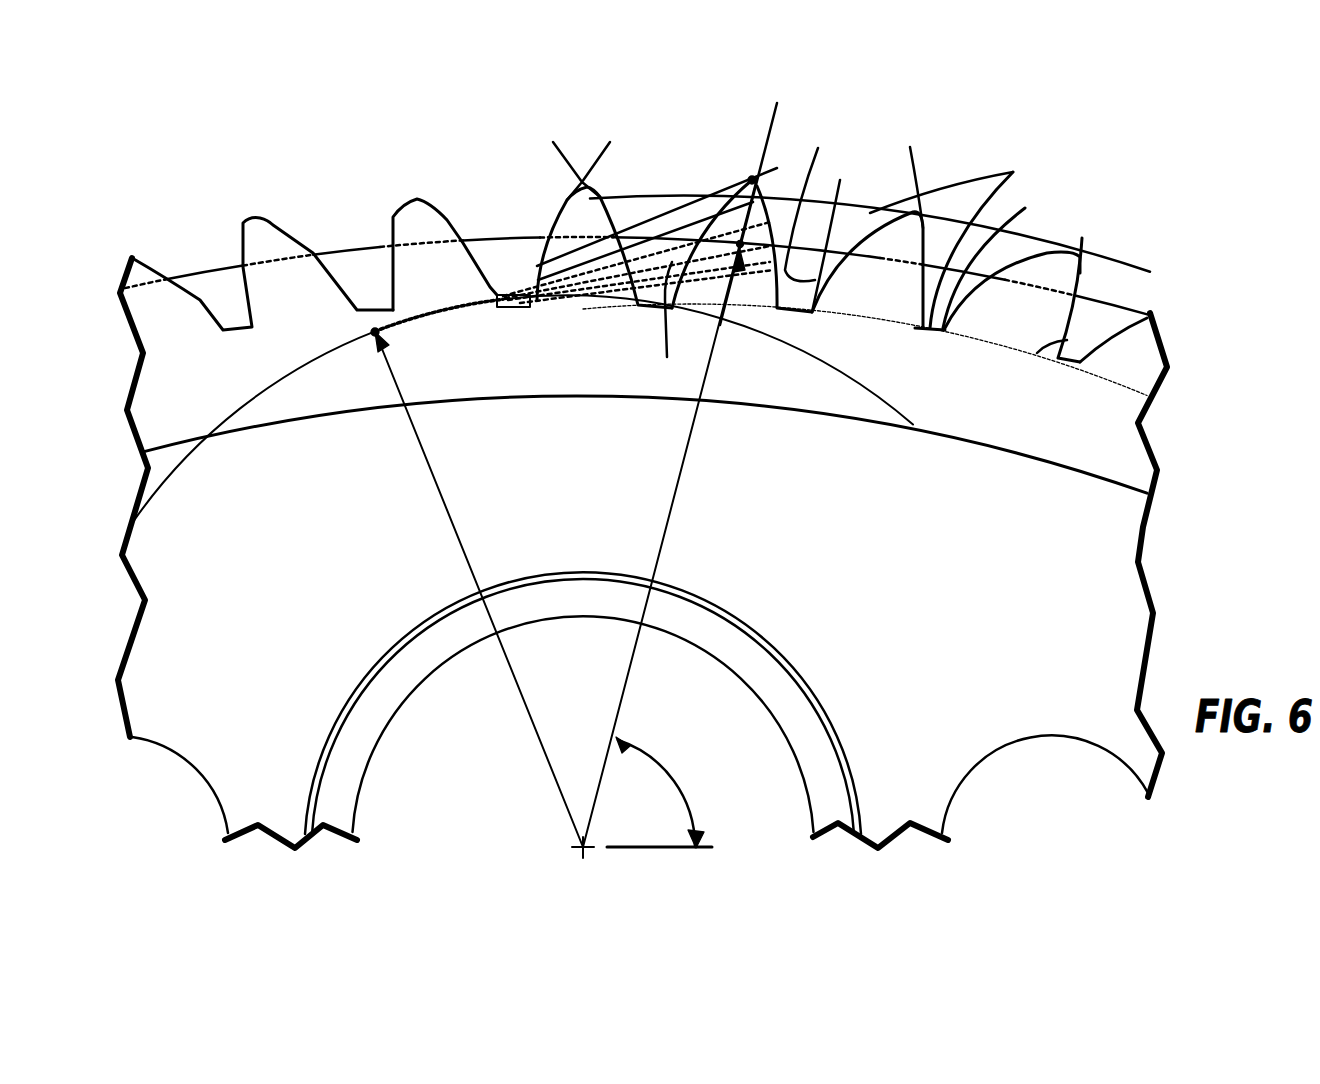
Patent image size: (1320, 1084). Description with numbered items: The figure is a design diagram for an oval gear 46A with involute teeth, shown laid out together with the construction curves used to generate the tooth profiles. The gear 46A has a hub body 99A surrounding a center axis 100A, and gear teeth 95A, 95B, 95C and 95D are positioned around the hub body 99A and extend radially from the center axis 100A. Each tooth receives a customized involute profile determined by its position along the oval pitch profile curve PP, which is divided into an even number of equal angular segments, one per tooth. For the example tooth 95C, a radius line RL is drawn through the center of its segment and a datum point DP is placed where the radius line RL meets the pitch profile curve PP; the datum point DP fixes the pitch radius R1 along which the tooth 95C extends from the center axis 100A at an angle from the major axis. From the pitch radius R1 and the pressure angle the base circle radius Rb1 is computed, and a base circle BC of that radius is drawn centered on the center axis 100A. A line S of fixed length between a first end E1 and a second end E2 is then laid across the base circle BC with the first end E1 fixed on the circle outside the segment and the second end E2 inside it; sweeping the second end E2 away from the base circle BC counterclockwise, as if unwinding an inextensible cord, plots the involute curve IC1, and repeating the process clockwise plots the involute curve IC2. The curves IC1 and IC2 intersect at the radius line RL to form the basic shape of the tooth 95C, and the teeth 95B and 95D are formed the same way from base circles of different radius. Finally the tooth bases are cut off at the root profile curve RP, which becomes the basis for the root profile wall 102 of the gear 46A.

The gear tooth 95A is at (417, 200).
The gear tooth 95B is at (573, 203).
The gear tooth 95C is at (675, 293).
The gear tooth 95D is at (903, 313).
The root profile wall 102 is at (1038, 267).
The hub body 99A is at (1127, 443).
The oval gear 46A is at (1133, 589).
The center axis 100A is at (585, 848).
The first end E1 is at (372, 333).
The second end E2 is at (751, 177).
The radius line RL is at (772, 134).
The datum point DP is at (815, 204).
The involute curve IC1 is at (841, 230).
The involute curve IC2 is at (654, 324).
The line S is at (670, 208).
The crest circle CP is at (1133, 265).
The pitch profile curve PP is at (1120, 307).
The root profile curve RP is at (1060, 340).
The base circle BC is at (833, 370).
The pitch radius R1 is at (683, 470).
The base circle radius Rb1 is at (427, 477).